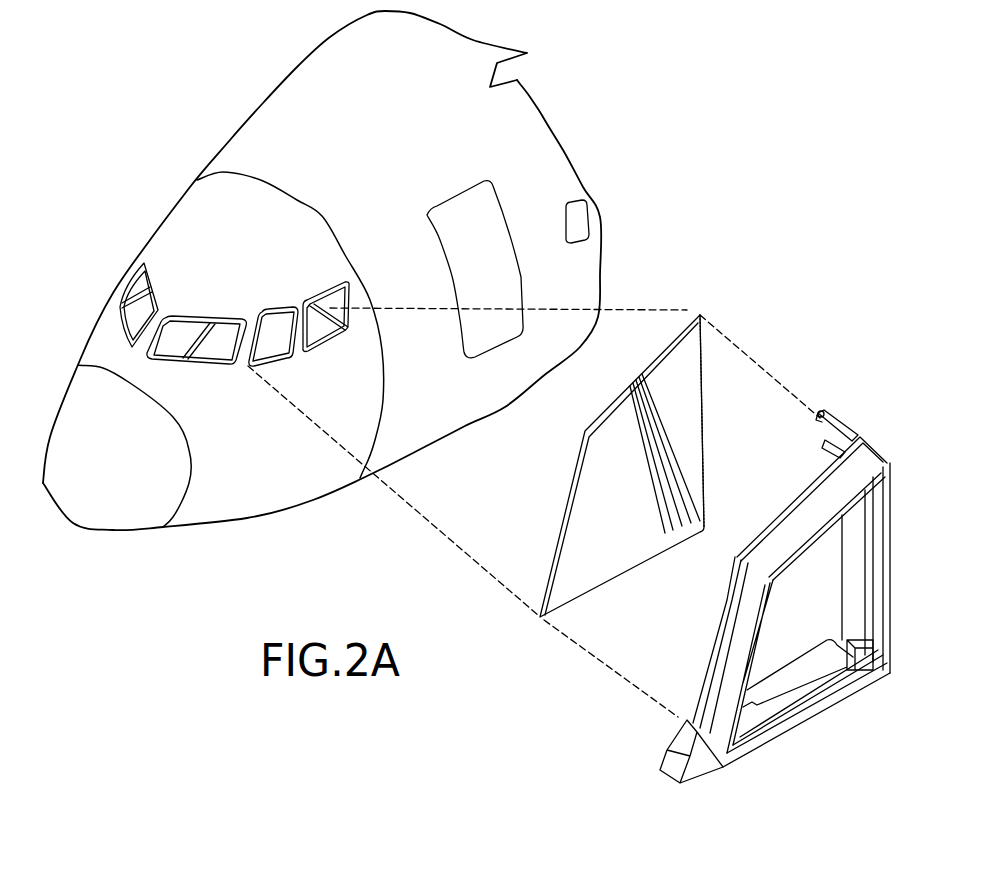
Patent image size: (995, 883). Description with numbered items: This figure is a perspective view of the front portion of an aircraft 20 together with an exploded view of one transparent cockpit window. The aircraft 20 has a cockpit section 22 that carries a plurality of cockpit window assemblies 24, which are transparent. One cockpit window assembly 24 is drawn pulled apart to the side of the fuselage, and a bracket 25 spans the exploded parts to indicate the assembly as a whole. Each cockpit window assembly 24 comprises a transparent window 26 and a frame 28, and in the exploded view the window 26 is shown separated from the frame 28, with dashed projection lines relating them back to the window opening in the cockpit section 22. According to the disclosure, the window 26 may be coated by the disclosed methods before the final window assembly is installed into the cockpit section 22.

The aircraft 20 is at (182, 113).
The cockpit section 22 is at (190, 233).
The cockpit window assembly 24 is at (197, 322).
The window assembly 25 is at (480, 613).
The transparent window 26 is at (560, 523).
The frame 28 is at (863, 470).